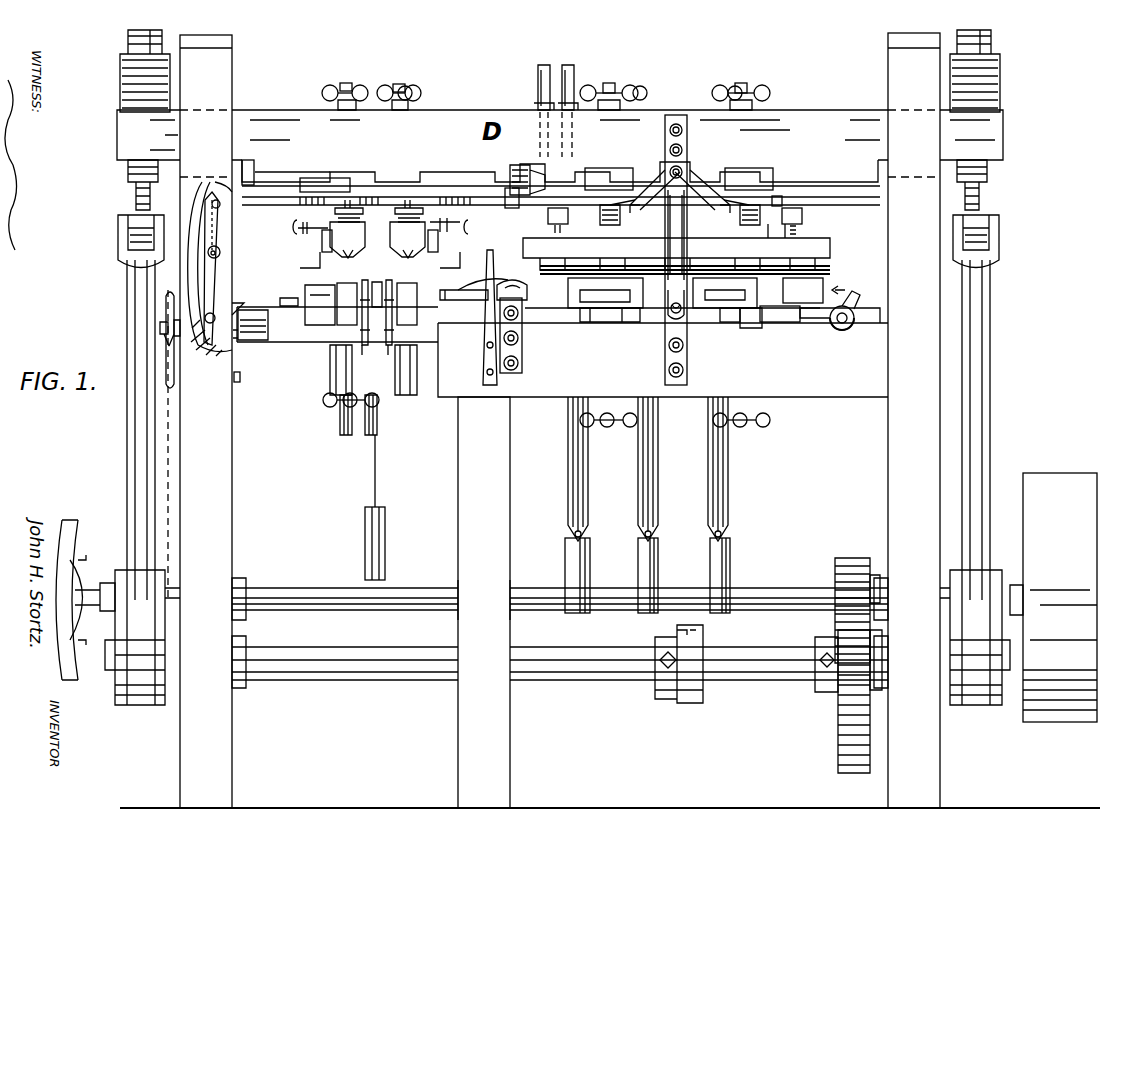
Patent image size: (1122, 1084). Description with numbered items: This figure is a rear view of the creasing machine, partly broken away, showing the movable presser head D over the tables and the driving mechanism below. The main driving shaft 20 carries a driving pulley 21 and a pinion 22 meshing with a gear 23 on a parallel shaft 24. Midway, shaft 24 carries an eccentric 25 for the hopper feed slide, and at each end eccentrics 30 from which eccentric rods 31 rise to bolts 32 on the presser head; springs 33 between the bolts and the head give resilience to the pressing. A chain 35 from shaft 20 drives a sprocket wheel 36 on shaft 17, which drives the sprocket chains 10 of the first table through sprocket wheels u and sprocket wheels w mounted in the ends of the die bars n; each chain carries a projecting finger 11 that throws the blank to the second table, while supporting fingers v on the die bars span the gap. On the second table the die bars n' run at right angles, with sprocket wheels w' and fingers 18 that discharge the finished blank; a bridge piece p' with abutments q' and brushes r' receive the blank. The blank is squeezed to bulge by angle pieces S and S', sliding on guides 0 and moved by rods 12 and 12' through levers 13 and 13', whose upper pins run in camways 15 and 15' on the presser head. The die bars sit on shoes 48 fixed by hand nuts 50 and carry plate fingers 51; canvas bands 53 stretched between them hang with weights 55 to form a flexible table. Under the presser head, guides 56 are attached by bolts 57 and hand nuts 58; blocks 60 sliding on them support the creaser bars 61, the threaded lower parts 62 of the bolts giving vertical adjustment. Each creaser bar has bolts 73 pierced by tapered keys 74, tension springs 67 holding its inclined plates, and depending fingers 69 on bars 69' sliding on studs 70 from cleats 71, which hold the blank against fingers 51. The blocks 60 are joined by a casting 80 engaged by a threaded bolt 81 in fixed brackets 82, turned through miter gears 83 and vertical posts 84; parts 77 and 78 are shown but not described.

The sprocket chains 10 is at (856, 320).
The projecting finger 11 is at (862, 300).
The rod 12 is at (666, 250).
The sliding rod 12' is at (252, 342).
The lever 13 is at (654, 323).
The lever 13' is at (187, 268).
The camway 15 is at (679, 175).
The camway 15' is at (195, 269).
The shaft 17 is at (160, 328).
The projecting fingers 18 is at (377, 284).
The main driving shaft 20 is at (298, 588).
The driving pulley 21 is at (1058, 480).
The pinion 22 is at (834, 566).
The gear 23 is at (838, 718).
The shaft 24 is at (292, 680).
The eccentric 25 is at (703, 700).
The eccentrics 30 is at (135, 705).
The eccentric rods 31 is at (127, 478).
The bolts 32 is at (136, 197).
The springs 33 is at (122, 88).
The chain 35 is at (170, 497).
The sprocket wheel 36 is at (166, 305).
The shoes 48 is at (775, 324).
The hand nuts 50 is at (350, 404).
The plate fingers 51 is at (752, 330).
The bands 53 is at (377, 470).
The weights 55 is at (385, 530).
The guides 56 is at (425, 165).
The bolts 57 is at (355, 76).
The hand nuts 58 is at (407, 82).
The blocks 60 is at (350, 180).
The creaser bars 61 is at (365, 245).
The lower parts of bolts 62 is at (380, 205).
The tension springs 67 is at (540, 272).
The depending fingers 69 is at (565, 262).
The longitudinal bars 69' is at (570, 244).
The studs 70 is at (800, 230).
The overhanging cleats 71 is at (802, 214).
The vertical bolts 73 is at (782, 200).
The tapered keys 74 is at (375, 222).
The adjusting screw 77 is at (318, 228).
The adjusting screw 78 is at (460, 226).
The casting 80 is at (300, 195).
The threaded bolt 81 is at (275, 180).
The fixed brackets 82 is at (247, 190).
The miter gears 83 is at (522, 165).
The vertical turning posts 84 is at (548, 68).
The guides 0 is at (610, 324).
The angle piece S is at (725, 319).
The angle piece S' is at (300, 299).
The die bars n is at (817, 283).
The die bars n' is at (358, 307).
The bridge piece p' is at (473, 317).
The plate q' is at (456, 284).
The brushes r' is at (482, 269).
The sprocket wheels u is at (524, 326).
The supporting fingers v is at (508, 285).
The sprocket wheels w is at (849, 335).
The sprocket wheels w' is at (353, 332).